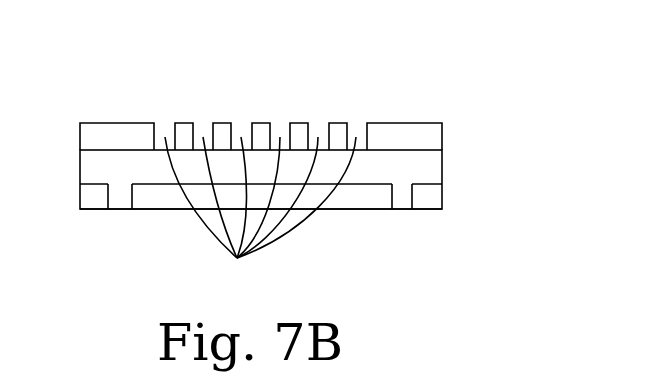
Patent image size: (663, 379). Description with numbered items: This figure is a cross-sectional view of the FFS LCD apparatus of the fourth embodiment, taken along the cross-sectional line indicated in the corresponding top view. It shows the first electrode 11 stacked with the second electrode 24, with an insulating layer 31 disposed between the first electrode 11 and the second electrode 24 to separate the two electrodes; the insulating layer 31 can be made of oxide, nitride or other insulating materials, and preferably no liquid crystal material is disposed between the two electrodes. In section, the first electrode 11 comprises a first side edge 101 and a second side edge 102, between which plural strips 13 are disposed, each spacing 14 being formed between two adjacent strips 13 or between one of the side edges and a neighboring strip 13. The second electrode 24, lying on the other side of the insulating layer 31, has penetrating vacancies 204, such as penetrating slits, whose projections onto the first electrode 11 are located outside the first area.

The first electrode 11 is at (443, 134).
The strips 13 is at (260, 216).
The spacings 14 is at (337, 128).
The second electrode 24 is at (442, 200).
The insulating layer 31 is at (442, 163).
The first side edge 101 is at (129, 133).
The second side edge 102 is at (395, 137).
The penetrating vacancies 204 is at (120, 196).